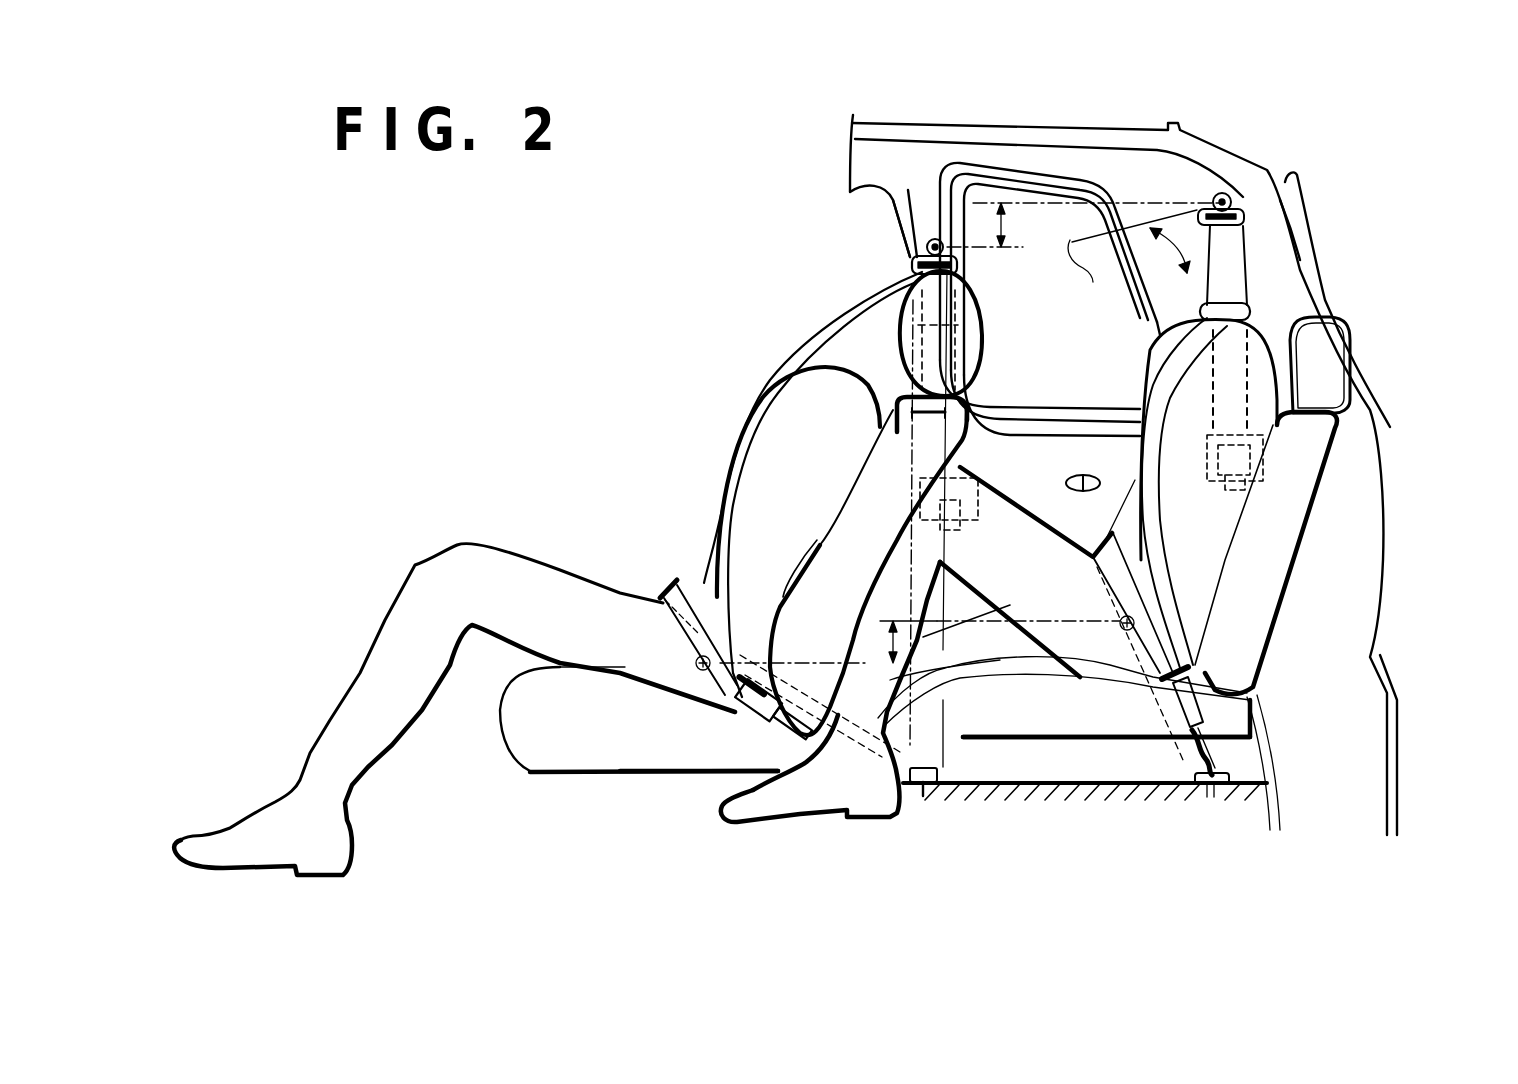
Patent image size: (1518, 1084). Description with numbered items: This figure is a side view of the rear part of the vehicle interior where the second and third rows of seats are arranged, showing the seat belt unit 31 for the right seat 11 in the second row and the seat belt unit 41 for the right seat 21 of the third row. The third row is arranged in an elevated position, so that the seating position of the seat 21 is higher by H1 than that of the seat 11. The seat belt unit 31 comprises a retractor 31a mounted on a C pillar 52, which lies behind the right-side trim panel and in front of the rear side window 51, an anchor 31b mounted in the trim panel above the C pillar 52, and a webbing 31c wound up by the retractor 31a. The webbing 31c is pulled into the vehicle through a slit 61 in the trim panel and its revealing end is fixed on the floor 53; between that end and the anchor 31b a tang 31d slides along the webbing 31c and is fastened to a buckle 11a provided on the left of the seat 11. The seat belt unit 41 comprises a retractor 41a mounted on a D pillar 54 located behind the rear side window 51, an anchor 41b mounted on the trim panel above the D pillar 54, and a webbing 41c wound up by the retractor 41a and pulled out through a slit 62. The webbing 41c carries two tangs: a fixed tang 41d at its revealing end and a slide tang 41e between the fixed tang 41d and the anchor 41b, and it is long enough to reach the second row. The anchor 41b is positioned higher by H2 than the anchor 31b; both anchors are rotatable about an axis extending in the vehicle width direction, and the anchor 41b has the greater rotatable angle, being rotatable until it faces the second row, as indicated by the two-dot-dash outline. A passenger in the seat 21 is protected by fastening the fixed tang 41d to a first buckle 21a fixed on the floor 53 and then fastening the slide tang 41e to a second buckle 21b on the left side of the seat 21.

The right seat in the second row 11 is at (518, 755).
The buckle 11a is at (778, 772).
The right seat of the third row 21 is at (990, 740).
The first buckle 21a is at (1232, 753).
The second buckle 21b is at (1258, 680).
The seat belt unit 31 is at (972, 440).
The retractor 31a is at (980, 500).
The anchor 31b is at (907, 250).
The webbing 31c is at (710, 493).
The tang 31d is at (907, 413).
The seat belt unit 41 is at (1263, 277).
The retractor 41a is at (1263, 463).
The anchor 41b is at (1245, 193).
The webbing 41c is at (1233, 150).
The fixed tang 41d is at (1190, 752).
The slide tang 41e is at (1187, 673).
The rear side window 51 is at (1047, 174).
The C pillar 52 is at (895, 207).
The floor 53 is at (1118, 777).
The D pillar 54 is at (1150, 290).
The slit 61 is at (980, 347).
The slit 62 is at (1150, 332).
The height difference of seating positions H1 is at (893, 625).
The height difference of anchors H2 is at (996, 240).